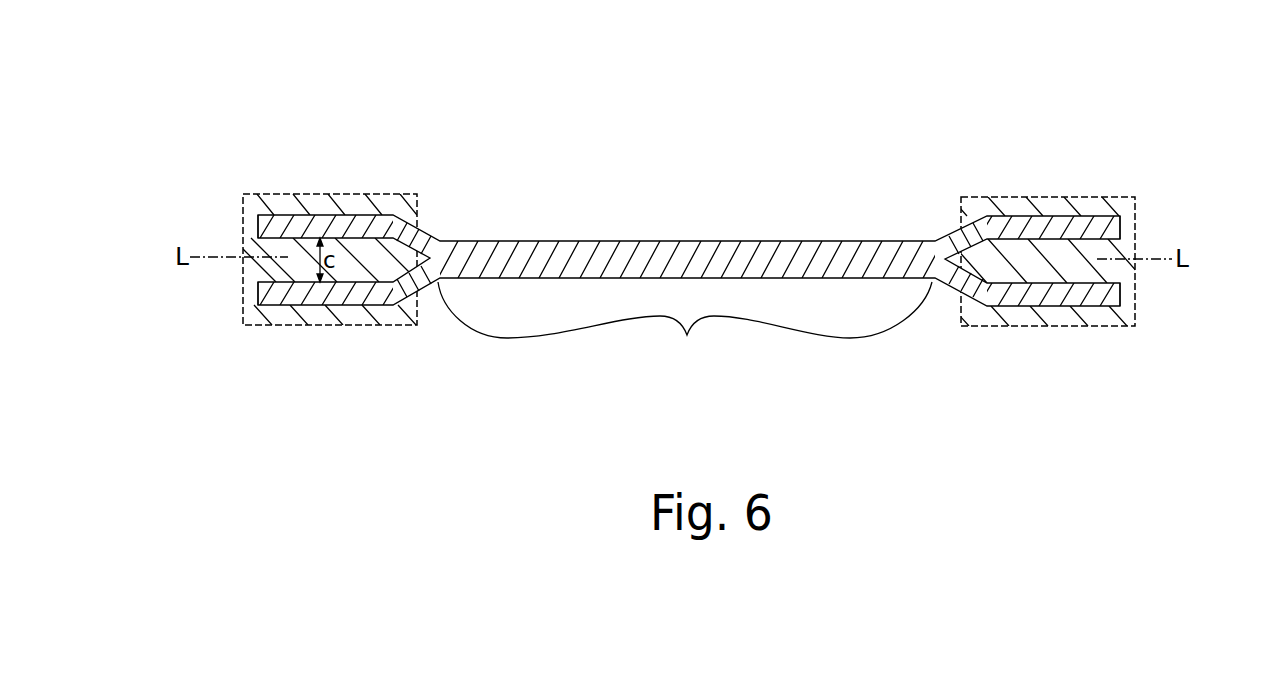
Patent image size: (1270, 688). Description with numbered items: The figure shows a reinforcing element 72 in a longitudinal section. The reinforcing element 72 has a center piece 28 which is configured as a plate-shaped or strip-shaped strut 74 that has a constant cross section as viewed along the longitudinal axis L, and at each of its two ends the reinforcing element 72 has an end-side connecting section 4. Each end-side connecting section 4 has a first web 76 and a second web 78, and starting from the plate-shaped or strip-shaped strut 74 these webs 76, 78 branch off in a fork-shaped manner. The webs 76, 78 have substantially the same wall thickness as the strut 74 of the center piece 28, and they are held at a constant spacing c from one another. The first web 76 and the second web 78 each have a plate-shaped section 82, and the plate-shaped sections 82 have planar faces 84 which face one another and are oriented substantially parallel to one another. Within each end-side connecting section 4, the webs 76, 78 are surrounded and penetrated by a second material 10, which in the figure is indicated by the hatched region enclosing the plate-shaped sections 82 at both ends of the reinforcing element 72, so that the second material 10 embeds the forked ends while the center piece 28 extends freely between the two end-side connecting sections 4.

The end-side connecting section 4 is at (277, 340).
The second material 10 is at (391, 195).
The center piece 28 is at (685, 325).
The reinforcing element 72 is at (928, 97).
The plate-shaped or strip-shaped strut 74 is at (668, 241).
The first web 76 is at (1122, 230).
The second web 78 is at (1122, 290).
The plate-shaped section 82 is at (306, 220).
The planar face 84 is at (273, 237).